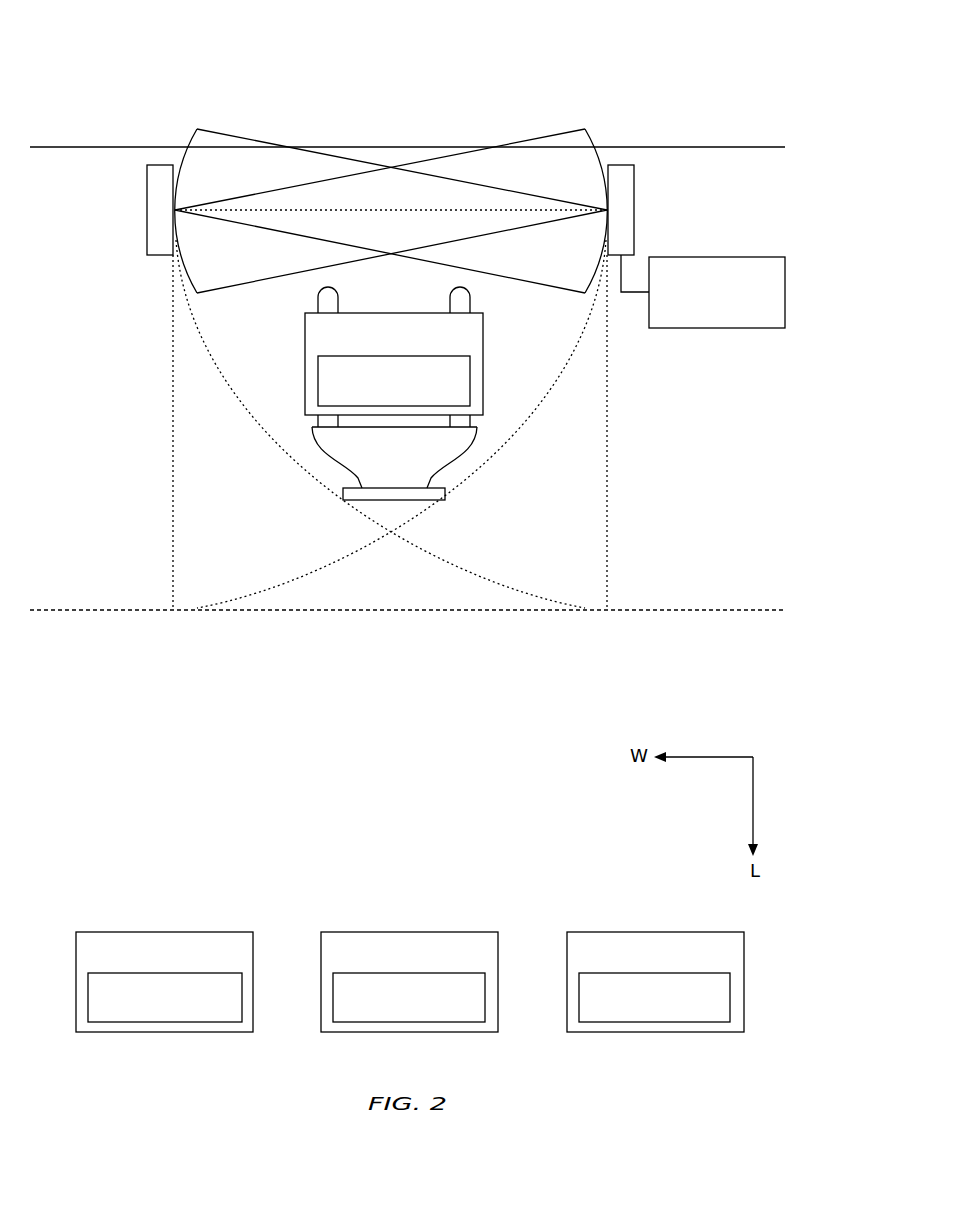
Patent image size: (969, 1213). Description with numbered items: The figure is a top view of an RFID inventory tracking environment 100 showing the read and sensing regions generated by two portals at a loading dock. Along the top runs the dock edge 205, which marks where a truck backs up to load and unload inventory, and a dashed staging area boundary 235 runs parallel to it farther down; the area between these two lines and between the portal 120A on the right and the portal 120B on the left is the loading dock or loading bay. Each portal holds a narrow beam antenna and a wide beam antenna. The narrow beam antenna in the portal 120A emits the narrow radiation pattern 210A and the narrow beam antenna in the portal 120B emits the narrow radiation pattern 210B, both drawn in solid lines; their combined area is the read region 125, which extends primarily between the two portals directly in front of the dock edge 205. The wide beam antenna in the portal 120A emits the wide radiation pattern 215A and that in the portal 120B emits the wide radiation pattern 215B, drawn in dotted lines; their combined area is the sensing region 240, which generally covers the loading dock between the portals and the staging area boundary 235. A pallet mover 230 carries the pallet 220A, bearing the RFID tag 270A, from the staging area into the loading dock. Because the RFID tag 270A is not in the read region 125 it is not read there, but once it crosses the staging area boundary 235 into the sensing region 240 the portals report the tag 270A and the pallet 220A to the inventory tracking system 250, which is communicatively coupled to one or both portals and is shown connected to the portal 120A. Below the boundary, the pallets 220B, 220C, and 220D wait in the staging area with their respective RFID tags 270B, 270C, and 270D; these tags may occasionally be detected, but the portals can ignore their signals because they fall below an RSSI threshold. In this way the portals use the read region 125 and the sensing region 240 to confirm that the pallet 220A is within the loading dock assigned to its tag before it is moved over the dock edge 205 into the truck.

The inventory tracking environment 100 is at (257, 52).
The read region 125 is at (388, 140).
The portal 120A is at (634, 211).
The portal 120B is at (147, 211).
The dock edge 205 is at (710, 146).
The narrow radiation pattern 210A is at (230, 287).
The narrow radiation pattern 210B is at (537, 285).
The wide radiation pattern 215A is at (607, 553).
The wide radiation pattern 215B is at (175, 553).
The pallet 220A is at (394, 357).
The pallet 220B is at (164, 982).
The pallet 220C is at (409, 982).
The pallet 220D is at (655, 982).
The pallet mover 230 is at (370, 500).
The staging area boundary 235 is at (508, 622).
The sensing region 240 is at (618, 453).
The inventory tracking system 250 is at (775, 323).
The RFID tag 270A is at (415, 401).
The RFID tag 270B is at (187, 1020).
The RFID tag 270C is at (432, 1020).
The RFID tag 270D is at (678, 1020).